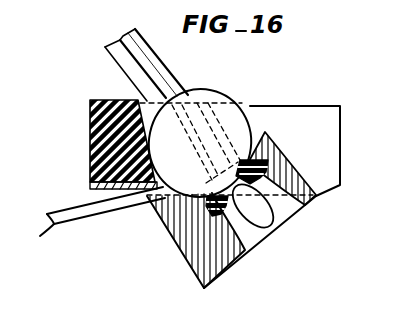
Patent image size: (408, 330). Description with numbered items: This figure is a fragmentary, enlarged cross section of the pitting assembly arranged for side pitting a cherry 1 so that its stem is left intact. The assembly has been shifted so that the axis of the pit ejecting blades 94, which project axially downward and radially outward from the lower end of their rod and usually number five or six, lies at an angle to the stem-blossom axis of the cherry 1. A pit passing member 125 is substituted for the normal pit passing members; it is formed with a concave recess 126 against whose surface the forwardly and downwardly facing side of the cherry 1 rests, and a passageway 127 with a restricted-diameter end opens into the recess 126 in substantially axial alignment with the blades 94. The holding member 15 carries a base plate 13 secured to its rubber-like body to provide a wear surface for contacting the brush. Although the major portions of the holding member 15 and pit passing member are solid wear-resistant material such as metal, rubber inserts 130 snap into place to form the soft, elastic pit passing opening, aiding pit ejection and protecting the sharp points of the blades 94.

The cherry 1 is at (229, 90).
The base plate 13 is at (100, 192).
The holding member 15 is at (314, 105).
The pit ejecting blades 94 is at (135, 80).
The pit passing member 125 is at (173, 233).
The concave recess 126 is at (262, 132).
The passageway 127 is at (254, 235).
The rubber inserts 130 is at (268, 170).